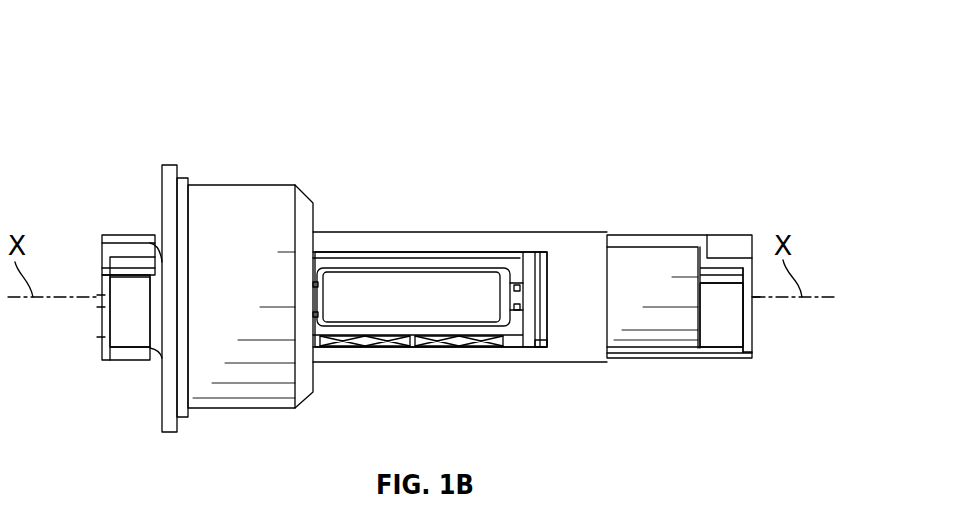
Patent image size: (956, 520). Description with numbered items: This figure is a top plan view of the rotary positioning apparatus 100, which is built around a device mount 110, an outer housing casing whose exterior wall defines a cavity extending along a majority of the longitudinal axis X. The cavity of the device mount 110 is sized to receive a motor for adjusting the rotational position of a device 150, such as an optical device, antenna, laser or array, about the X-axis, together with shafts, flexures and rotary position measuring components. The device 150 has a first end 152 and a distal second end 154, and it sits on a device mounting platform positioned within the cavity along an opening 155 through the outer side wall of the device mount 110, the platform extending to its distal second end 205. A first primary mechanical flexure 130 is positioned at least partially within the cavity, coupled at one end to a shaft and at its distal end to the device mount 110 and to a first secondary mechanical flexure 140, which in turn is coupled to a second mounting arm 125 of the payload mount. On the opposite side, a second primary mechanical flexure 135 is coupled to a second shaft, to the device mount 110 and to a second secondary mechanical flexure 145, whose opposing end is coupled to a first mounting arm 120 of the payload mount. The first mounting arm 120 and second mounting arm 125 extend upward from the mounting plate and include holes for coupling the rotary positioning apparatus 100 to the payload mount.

The rotary positioning apparatus 100 is at (176, 56).
The device mount 110 is at (243, 202).
The first mounting arm 120 is at (753, 337).
The second mounting arm 125 is at (108, 337).
The first primary mechanical flexure 130 is at (157, 260).
The second primary mechanical flexure 135 is at (646, 214).
The first secondary mechanical flexure 140 is at (127, 292).
The second secondary mechanical flexure 145 is at (723, 297).
The device 150 is at (467, 285).
The first end 152 is at (325, 287).
The second end 154 is at (517, 292).
The opening 155 is at (414, 265).
The second end 205 is at (447, 330).